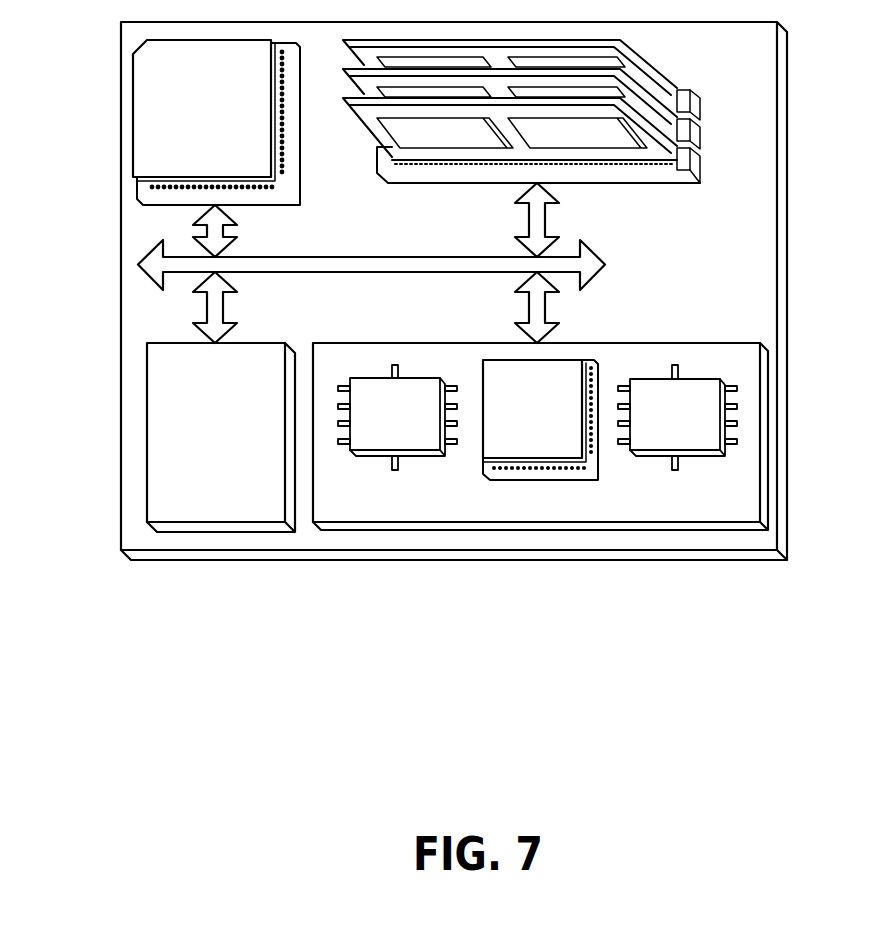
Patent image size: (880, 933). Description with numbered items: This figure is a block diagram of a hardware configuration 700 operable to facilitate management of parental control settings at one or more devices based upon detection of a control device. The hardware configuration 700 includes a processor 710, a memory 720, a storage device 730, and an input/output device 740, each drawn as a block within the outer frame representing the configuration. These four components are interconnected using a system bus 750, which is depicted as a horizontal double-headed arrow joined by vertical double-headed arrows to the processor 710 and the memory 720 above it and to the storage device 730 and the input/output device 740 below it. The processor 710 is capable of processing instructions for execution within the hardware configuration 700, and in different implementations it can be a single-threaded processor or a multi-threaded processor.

The hardware configuration 700 is at (103, 662).
The processor 710 is at (216, 122).
The memory 720 is at (675, 86).
The storage device 730 is at (221, 437).
The input/output device 740 is at (718, 343).
The system bus 750 is at (372, 273).